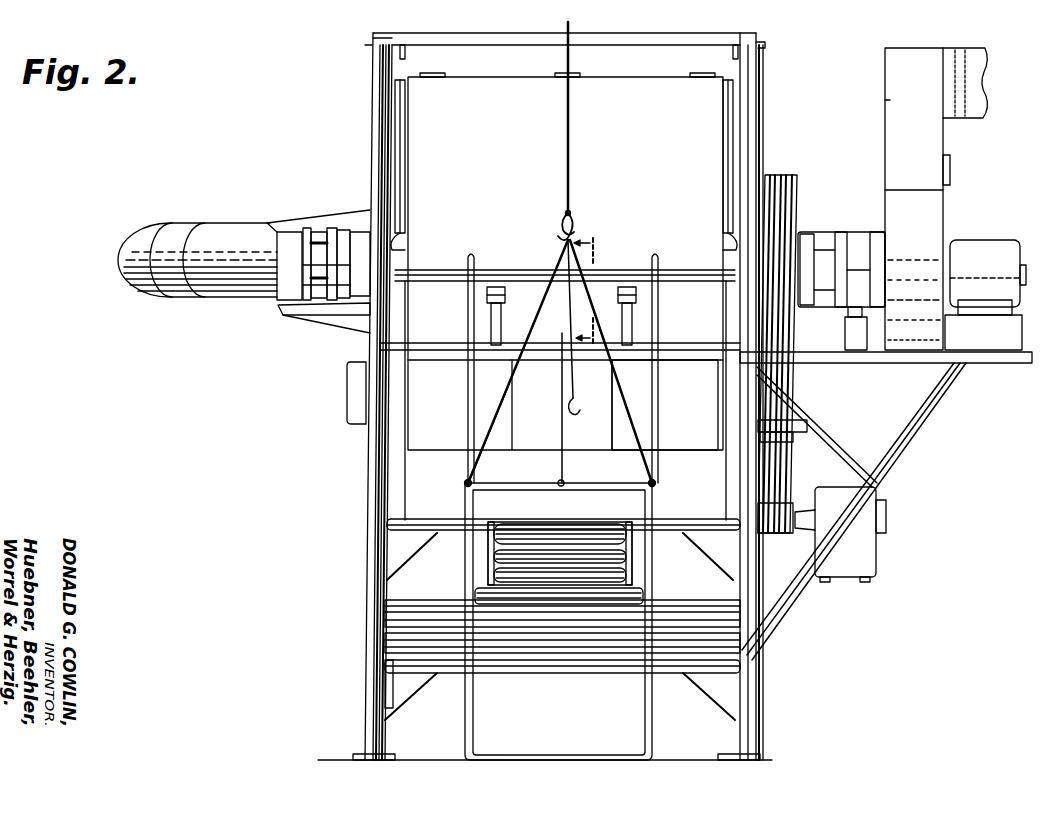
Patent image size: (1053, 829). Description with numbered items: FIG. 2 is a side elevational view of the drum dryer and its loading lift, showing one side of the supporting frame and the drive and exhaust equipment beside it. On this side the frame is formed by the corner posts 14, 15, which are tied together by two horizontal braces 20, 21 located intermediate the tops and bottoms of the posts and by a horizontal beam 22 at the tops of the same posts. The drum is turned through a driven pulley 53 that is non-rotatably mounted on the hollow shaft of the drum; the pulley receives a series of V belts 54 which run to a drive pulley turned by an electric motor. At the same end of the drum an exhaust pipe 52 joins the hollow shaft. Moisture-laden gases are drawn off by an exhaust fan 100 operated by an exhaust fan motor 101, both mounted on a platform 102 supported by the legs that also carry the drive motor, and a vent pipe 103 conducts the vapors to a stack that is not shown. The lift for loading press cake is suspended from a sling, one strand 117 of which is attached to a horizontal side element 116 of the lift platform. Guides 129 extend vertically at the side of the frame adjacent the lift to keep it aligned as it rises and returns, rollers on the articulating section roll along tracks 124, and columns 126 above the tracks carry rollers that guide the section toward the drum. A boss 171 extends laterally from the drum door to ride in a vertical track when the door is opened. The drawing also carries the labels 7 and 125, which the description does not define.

The section line 7- 7 is at (593, 289).
The corner post 14 is at (368, 688).
The corner post 15 is at (752, 706).
The horizontal brace 20 is at (446, 674).
The horizontal brace 21 is at (420, 522).
The horizontal beam 22 is at (436, 356).
The exhaust pipe 52 is at (860, 232).
The driven pulley 53 is at (798, 204).
The V belts 54 is at (790, 476).
The exhaust fan 100 is at (936, 208).
The exhaust fan motor 101 is at (970, 243).
The platform 102 is at (908, 363).
The vent pipe 103 is at (975, 56).
The horizontal side element 116 is at (523, 486).
The sling strand 117 is at (565, 462).
The tracks 124 is at (507, 406).
The roller assembly 125 is at (571, 540).
The columns 126 is at (500, 318).
The guides 129 is at (665, 405).
The boss 171 is at (405, 246).